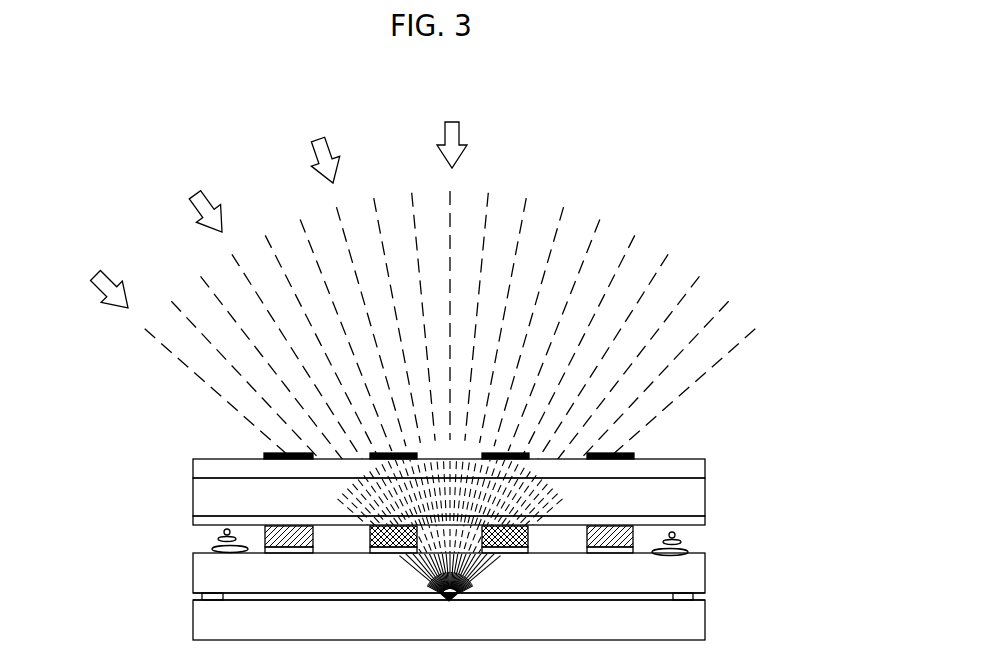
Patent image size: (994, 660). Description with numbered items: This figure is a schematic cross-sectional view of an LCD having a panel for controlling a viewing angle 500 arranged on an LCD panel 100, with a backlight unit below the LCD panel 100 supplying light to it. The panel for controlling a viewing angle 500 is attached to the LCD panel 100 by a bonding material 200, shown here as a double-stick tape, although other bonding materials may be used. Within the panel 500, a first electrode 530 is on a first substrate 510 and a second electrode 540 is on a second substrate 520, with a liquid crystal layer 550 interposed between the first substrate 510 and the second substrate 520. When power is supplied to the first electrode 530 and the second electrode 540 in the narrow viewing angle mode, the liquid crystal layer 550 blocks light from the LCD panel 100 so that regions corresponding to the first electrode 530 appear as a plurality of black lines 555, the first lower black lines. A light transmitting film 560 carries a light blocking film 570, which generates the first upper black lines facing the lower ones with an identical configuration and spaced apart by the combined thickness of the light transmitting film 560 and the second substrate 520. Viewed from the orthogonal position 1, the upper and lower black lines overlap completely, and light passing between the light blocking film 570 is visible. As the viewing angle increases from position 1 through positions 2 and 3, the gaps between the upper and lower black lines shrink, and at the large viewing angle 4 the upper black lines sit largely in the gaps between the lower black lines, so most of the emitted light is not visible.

The LCD panel 100 is at (695, 628).
The bonding material 200 is at (697, 597).
The panel for controlling a viewing angle 500 is at (186, 451).
The first substrate 510 is at (203, 583).
The second substrate 520 is at (203, 489).
The first electrode 530 is at (622, 555).
The second electrode 540 is at (203, 521).
The liquid crystal layer 550 is at (263, 537).
The black lines 555 is at (264, 548).
The light transmitting film 560 is at (695, 473).
The light blocking film 570 is at (628, 456).
The viewing position orthogonal to the panel 1 is at (452, 129).
The first oblique viewing angle 2 is at (325, 148).
The second oblique viewing angle 3 is at (205, 201).
The large viewing angle 4 is at (102, 285).